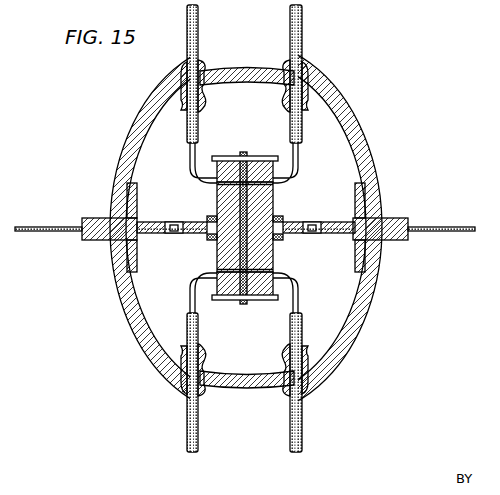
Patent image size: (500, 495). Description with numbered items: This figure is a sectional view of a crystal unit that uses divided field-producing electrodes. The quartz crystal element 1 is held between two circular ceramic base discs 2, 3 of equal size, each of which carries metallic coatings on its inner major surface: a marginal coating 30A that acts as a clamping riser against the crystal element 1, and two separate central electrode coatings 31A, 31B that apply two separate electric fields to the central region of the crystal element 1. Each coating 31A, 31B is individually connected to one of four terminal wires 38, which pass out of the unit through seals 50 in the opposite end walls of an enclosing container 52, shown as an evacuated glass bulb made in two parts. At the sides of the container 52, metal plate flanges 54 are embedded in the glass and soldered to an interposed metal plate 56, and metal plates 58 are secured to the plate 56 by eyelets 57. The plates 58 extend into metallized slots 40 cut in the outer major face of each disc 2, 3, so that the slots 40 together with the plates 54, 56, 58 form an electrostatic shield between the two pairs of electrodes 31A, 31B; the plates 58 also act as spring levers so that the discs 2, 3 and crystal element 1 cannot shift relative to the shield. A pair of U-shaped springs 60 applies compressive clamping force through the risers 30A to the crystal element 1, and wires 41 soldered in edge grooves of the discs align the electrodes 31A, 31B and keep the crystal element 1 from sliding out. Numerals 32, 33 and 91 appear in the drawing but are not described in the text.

The crystal element 1 is at (244, 156).
The ceramic base disc 2 is at (231, 160).
The ceramic base disc 3 is at (263, 156).
The marginal coating 30A is at (238, 172).
The central electrode coating 31A is at (243, 208).
The central electrode coating 31B is at (247, 262).
The insulating member 32 is at (263, 188).
The sealing member 33 is at (275, 176).
The terminal wire 38 is at (190, 160).
The metallized slot 40 is at (243, 241).
The wire 41 is at (219, 156).
The seal 50 is at (290, 45).
The enclosing container 52 is at (357, 121).
The metal plate flange 54 is at (103, 222).
The interposed metal plate 56 is at (51, 221).
The eyelet 57 is at (177, 235).
The metal plate 58 is at (153, 230).
The U-shaped spring 60 is at (207, 238).
The assembly 91 is at (108, 115).